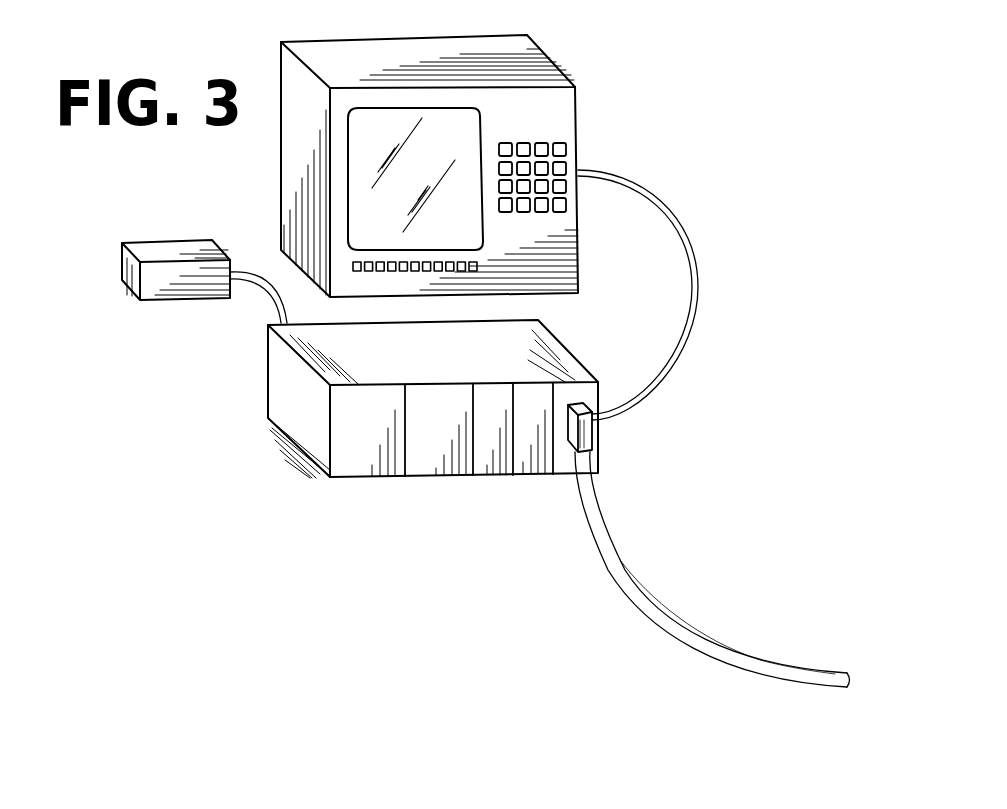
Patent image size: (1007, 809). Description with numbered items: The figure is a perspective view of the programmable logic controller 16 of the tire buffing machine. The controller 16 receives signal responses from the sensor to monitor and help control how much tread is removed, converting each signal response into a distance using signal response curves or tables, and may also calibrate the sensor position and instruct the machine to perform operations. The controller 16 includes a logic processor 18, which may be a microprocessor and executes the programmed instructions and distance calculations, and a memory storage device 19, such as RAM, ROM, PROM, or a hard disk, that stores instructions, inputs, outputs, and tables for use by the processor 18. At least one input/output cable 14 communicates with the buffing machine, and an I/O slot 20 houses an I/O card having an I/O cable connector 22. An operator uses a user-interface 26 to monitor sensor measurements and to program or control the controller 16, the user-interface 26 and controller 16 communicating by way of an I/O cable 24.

The input/output cable 14 is at (692, 638).
The programmable logic controller 16 is at (233, 492).
The logic processor 18 is at (386, 447).
The memory storage device 19 is at (130, 280).
The I/O slot 20 is at (426, 470).
The I/O cable connector 22 is at (574, 427).
The I/O cable 24 is at (697, 283).
The user-interface 26 is at (565, 70).